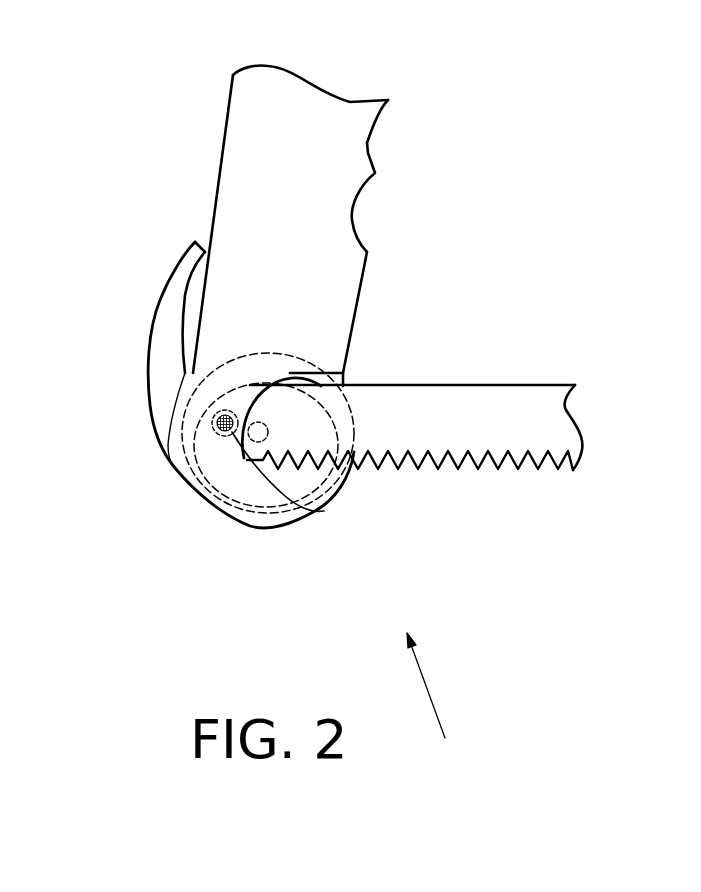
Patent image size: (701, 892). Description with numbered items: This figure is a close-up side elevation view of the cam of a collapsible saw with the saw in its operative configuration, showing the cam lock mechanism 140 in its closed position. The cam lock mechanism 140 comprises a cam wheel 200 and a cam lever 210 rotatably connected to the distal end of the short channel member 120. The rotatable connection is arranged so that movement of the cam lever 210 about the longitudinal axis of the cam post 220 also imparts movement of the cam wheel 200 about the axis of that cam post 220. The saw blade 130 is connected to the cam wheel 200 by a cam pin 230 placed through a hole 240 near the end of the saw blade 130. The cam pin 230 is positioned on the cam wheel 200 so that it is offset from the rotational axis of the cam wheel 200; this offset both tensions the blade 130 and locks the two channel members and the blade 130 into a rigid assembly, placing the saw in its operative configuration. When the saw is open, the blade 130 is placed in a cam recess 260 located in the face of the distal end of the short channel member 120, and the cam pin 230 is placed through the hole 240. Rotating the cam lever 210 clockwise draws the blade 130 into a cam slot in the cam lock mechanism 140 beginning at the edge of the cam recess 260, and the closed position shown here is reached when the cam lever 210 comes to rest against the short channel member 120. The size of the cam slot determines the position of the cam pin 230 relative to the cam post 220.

The short channel member 120 is at (369, 159).
The saw blade 130 is at (567, 408).
The cam lock mechanism 140 is at (441, 700).
The cam wheel 200 is at (260, 515).
The cam lever 210 is at (171, 279).
The cam post 220 is at (249, 442).
The cam pin 230 is at (228, 433).
The hole 240 is at (213, 422).
The cam recess 260 is at (288, 490).